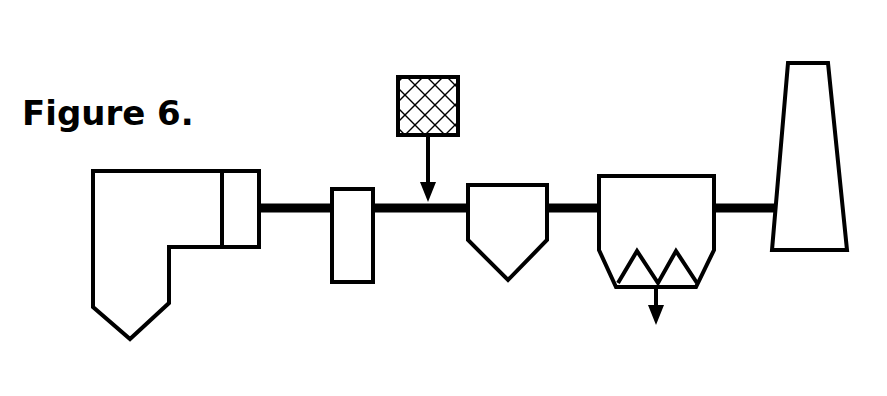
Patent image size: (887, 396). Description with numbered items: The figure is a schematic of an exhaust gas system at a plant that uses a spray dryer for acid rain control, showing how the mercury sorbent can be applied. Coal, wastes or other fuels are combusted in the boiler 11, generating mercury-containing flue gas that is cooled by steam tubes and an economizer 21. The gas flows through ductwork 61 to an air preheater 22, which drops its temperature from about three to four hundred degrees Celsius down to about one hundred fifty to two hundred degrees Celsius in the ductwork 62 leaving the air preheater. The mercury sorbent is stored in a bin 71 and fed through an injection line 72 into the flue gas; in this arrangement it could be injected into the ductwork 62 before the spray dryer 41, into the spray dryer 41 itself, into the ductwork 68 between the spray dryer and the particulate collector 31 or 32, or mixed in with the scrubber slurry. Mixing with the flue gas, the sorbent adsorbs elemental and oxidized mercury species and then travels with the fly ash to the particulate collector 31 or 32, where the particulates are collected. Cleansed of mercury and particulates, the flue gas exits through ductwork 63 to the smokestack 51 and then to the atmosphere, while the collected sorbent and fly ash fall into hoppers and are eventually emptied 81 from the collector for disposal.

The boiler 11 is at (114, 303).
The economizer 21 is at (238, 230).
The air preheater 22 is at (348, 265).
The fabric filter 31 is at (657, 214).
The particulate collector 32 is at (615, 198).
The spray dryer 41 is at (490, 205).
The smokestack 51 is at (790, 237).
The ductwork 61 is at (288, 215).
The ductwork 62 is at (402, 215).
The ductwork 63 is at (732, 215).
The ductwork 68 is at (555, 215).
The bin 71 is at (415, 97).
The injection line 72 is at (427, 163).
The emptying of hoppers 81 is at (656, 322).